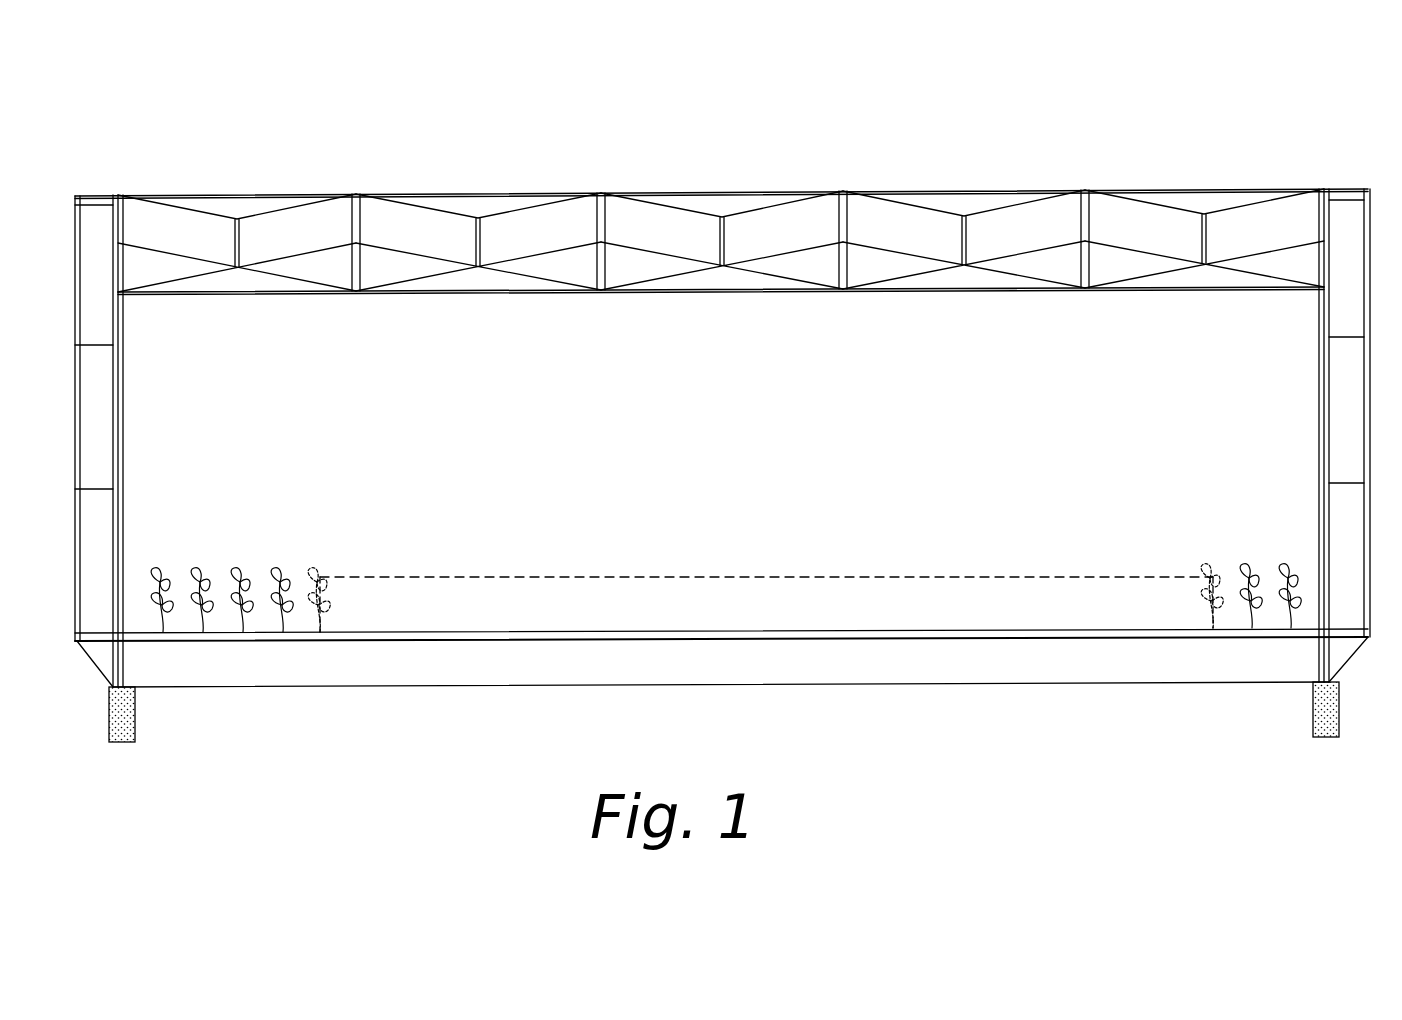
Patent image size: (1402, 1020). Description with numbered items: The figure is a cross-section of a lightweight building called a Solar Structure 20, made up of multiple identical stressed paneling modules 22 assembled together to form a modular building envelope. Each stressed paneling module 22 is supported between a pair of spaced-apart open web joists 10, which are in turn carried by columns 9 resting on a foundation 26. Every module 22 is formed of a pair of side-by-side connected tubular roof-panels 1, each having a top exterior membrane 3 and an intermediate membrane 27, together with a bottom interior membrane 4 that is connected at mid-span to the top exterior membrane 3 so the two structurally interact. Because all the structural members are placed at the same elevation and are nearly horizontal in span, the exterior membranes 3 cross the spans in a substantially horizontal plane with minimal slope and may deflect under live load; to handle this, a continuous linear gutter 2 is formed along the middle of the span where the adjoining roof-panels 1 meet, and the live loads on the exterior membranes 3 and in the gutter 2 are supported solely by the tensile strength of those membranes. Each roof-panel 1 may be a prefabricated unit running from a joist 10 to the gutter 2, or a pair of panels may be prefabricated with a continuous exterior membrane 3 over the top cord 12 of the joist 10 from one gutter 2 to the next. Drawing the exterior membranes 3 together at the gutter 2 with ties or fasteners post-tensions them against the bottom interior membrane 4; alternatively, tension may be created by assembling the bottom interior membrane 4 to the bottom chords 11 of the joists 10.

The tubular roof-panel 1 is at (885, 252).
The gutter 2 is at (471, 252).
The top exterior membrane 3 is at (527, 195).
The bottom interior membrane 4 is at (746, 275).
The column 9 is at (124, 418).
The joist 10 is at (358, 228).
The bottom chord 11 is at (600, 292).
The top cord 12 is at (601, 198).
The Solar Structure 20 is at (1108, 118).
The stressed paneling module 22 is at (721, 236).
The foundation 26 is at (128, 722).
The intermediate membrane 27 is at (296, 258).